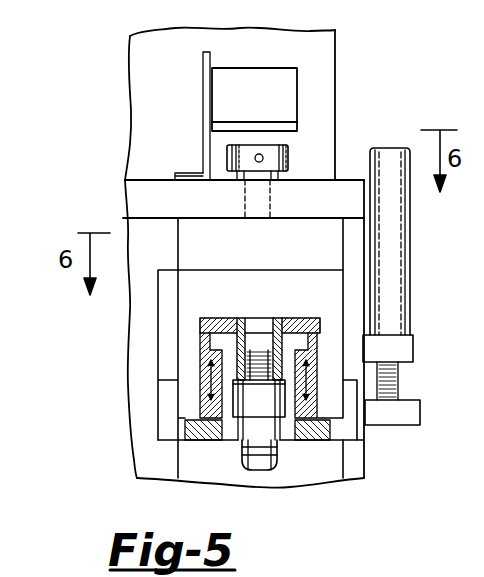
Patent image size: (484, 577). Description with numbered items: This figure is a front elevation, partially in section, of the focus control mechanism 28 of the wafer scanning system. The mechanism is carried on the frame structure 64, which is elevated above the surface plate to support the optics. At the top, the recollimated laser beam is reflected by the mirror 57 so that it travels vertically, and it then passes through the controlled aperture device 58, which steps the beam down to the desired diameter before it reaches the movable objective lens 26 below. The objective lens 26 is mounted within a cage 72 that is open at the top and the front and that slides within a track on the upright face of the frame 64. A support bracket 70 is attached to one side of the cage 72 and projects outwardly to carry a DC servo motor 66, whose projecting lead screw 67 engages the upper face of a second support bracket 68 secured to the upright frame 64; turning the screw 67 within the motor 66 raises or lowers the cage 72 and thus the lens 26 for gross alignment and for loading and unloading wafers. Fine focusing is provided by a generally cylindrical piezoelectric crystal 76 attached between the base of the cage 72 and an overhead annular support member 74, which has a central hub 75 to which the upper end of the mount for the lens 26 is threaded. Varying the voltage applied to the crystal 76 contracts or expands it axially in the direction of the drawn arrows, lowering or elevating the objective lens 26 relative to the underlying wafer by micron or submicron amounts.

The frame structure 64 is at (338, 50).
The mirror 57 is at (262, 105).
The controlled aperture device 58 is at (288, 163).
The DC servo motor 66 is at (400, 280).
The support bracket 70 is at (410, 345).
The lead screw 67 is at (398, 385).
The support bracket 68 is at (405, 415).
The focus control mechanism 28 is at (126, 460).
The cage 72 is at (157, 358).
The piezoelectric crystal 76 is at (200, 402).
The annular support member 74 is at (288, 322).
The central hub 75 is at (243, 348).
The objective lens 26 is at (242, 440).